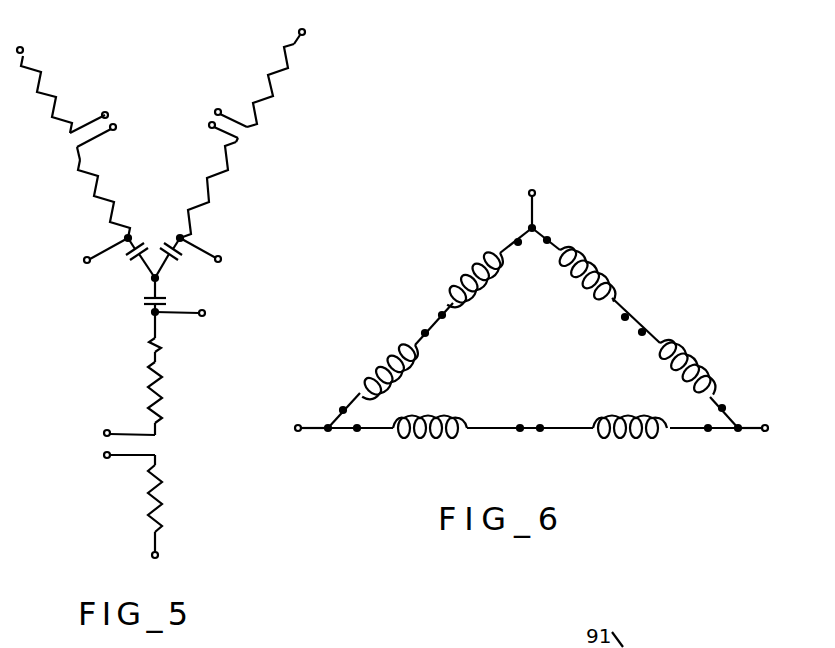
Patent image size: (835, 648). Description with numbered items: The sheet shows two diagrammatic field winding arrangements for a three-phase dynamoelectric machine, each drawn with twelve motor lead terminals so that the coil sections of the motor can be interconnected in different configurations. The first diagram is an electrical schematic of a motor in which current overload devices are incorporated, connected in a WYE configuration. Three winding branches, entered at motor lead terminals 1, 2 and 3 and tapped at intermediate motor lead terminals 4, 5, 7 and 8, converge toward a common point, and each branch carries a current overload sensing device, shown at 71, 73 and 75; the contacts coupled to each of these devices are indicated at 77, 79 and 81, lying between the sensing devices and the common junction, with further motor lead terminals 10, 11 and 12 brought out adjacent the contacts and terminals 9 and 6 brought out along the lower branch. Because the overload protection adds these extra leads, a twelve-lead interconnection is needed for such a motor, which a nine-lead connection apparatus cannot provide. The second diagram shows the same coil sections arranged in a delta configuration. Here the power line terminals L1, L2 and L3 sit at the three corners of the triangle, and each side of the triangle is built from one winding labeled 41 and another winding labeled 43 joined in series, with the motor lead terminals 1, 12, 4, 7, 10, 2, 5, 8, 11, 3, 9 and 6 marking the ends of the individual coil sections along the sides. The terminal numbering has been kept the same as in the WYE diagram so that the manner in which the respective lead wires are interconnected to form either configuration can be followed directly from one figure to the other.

In FIG. 5, the motor lead terminal 1 is at (22, 47).
In FIG. 6, the motor lead terminal 1 is at (549, 239).
In FIG. 5, the motor lead terminal 2 is at (305, 33).
In FIG. 6, the motor lead terminal 2 is at (708, 430).
In FIG. 5, the motor lead terminal 3 is at (158, 554).
In FIG. 6, the motor lead terminal 3 is at (342, 409).
In FIG. 5, the motor lead terminal 4 is at (105, 112).
In FIG. 6, the motor lead terminal 4 is at (625, 316).
In FIG. 5, the motor lead terminal 5 is at (215, 110).
In FIG. 6, the motor lead terminal 5 is at (540, 427).
In FIG. 5, the motor lead terminal 6 is at (103, 455).
In FIG. 6, the motor lead terminal 6 is at (424, 332).
In FIG. 5, the motor lead terminal 7 is at (116, 128).
In FIG. 6, the motor lead terminal 7 is at (644, 332).
In FIG. 5, the motor lead terminal 8 is at (209, 127).
In FIG. 6, the motor lead terminal 8 is at (519, 426).
In FIG. 5, the motor lead terminal 9 is at (103, 432).
In FIG. 6, the motor lead terminal 9 is at (441, 313).
In FIG. 5, the motor lead terminal 10 is at (84, 259).
In FIG. 6, the motor lead terminal 10 is at (722, 407).
In FIG. 5, the motor lead terminal 11 is at (222, 259).
In FIG. 6, the motor lead terminal 11 is at (357, 431).
In FIG. 5, the motor lead terminal 12 is at (205, 313).
In FIG. 6, the motor lead terminal 12 is at (516, 241).
In FIG. 5, the sensing device 71 is at (117, 224).
In FIG. 5, the sensing device 73 is at (190, 219).
In FIG. 5, the sensing device 75 is at (165, 349).
In FIG. 5, the contacts 77 is at (130, 254).
In FIG. 5, the contacts 79 is at (183, 254).
In FIG. 5, the contacts 81 is at (143, 305).
In FIG. 6, the winding 41 is at (384, 364).
In FIG. 6, the winding 43 is at (478, 264).
In FIG. 6, the power line terminal L1 is at (531, 196).
In FIG. 6, the power line terminal L2 is at (767, 433).
In FIG. 6, the power line terminal L3 is at (294, 436).